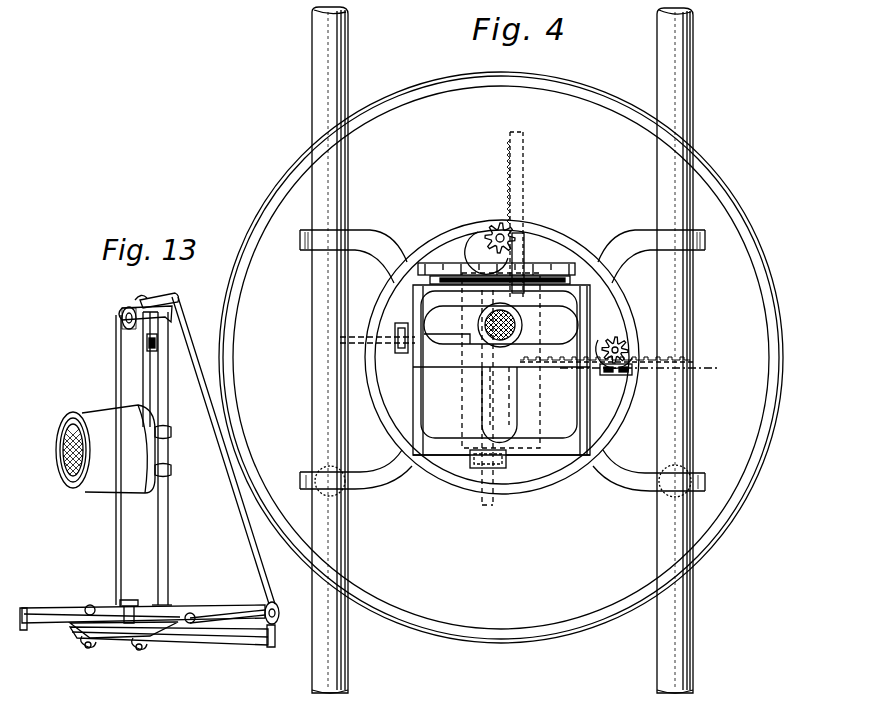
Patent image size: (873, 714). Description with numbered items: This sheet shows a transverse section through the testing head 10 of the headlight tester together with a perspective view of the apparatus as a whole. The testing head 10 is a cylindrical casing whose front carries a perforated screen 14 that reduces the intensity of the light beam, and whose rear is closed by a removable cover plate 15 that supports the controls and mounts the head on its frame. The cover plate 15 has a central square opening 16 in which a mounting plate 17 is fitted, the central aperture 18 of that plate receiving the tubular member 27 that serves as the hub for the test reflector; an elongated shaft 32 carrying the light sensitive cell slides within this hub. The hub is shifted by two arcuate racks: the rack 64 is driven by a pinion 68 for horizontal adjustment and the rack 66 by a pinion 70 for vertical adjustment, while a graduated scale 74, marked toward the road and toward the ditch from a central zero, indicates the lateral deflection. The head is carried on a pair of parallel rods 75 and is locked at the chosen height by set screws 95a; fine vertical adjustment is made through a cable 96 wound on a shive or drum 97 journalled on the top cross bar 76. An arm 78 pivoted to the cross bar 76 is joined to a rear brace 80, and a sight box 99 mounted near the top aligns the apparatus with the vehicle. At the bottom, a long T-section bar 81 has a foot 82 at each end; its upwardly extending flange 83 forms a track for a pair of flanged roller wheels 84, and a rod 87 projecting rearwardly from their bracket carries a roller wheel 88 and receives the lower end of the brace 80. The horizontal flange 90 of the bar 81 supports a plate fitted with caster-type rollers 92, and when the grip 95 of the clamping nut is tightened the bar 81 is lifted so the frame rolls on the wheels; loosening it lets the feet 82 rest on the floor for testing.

In FIG. 4, the laterally spaced parallel rods 75 is at (318, 83).
In FIG. 13, the laterally spaced parallel rods 75 is at (108, 561).
In FIG. 4, the removable cover plate 15 is at (399, 118).
In FIG. 4, the set screws 95a is at (340, 492).
In FIG. 4, the graduated scale 74 is at (548, 262).
In FIG. 4, the aperture 18 is at (571, 410).
In FIG. 4, the tubular member 27 is at (490, 325).
In FIG. 4, the elongated shaft 32 is at (515, 325).
In FIG. 4, the rack 66 is at (522, 182).
In FIG. 4, the pinion 70 is at (498, 230).
In FIG. 4, the pinion 68 is at (625, 348).
In FIG. 4, the rack 64 is at (648, 370).
In FIG. 4, the square opening 16 is at (445, 420).
In FIG. 4, the mounting plate 17 is at (555, 450).
In FIG. 13, the shive or drum 97 is at (122, 326).
In FIG. 13, the top cross bar 76 is at (138, 308).
In FIG. 13, the arm 78 is at (165, 297).
In FIG. 13, the cable 96 is at (143, 378).
In FIG. 13, the sight box 99 is at (156, 345).
In FIG. 13, the testing head 10 is at (96, 441).
In FIG. 13, the perforated screen 14 is at (66, 470).
In FIG. 13, the rear brace 80 is at (238, 530).
In FIG. 13, the horizontally extending bar 81 is at (45, 620).
In FIG. 13, the horizontally disposed flange 90 is at (205, 640).
In FIG. 13, the upwardly extending flange 83 is at (68, 612).
In FIG. 13, the rod 87 is at (225, 618).
In FIG. 13, the flanged roller wheels 84 is at (97, 602).
In FIG. 13, the enlarged manipulating head or grip 95 is at (135, 600).
In FIG. 13, the roller wheel 88 is at (283, 603).
In FIG. 13, the foot or supporting member 82 is at (27, 632).
In FIG. 13, the caster-type rollers 92 is at (134, 650).